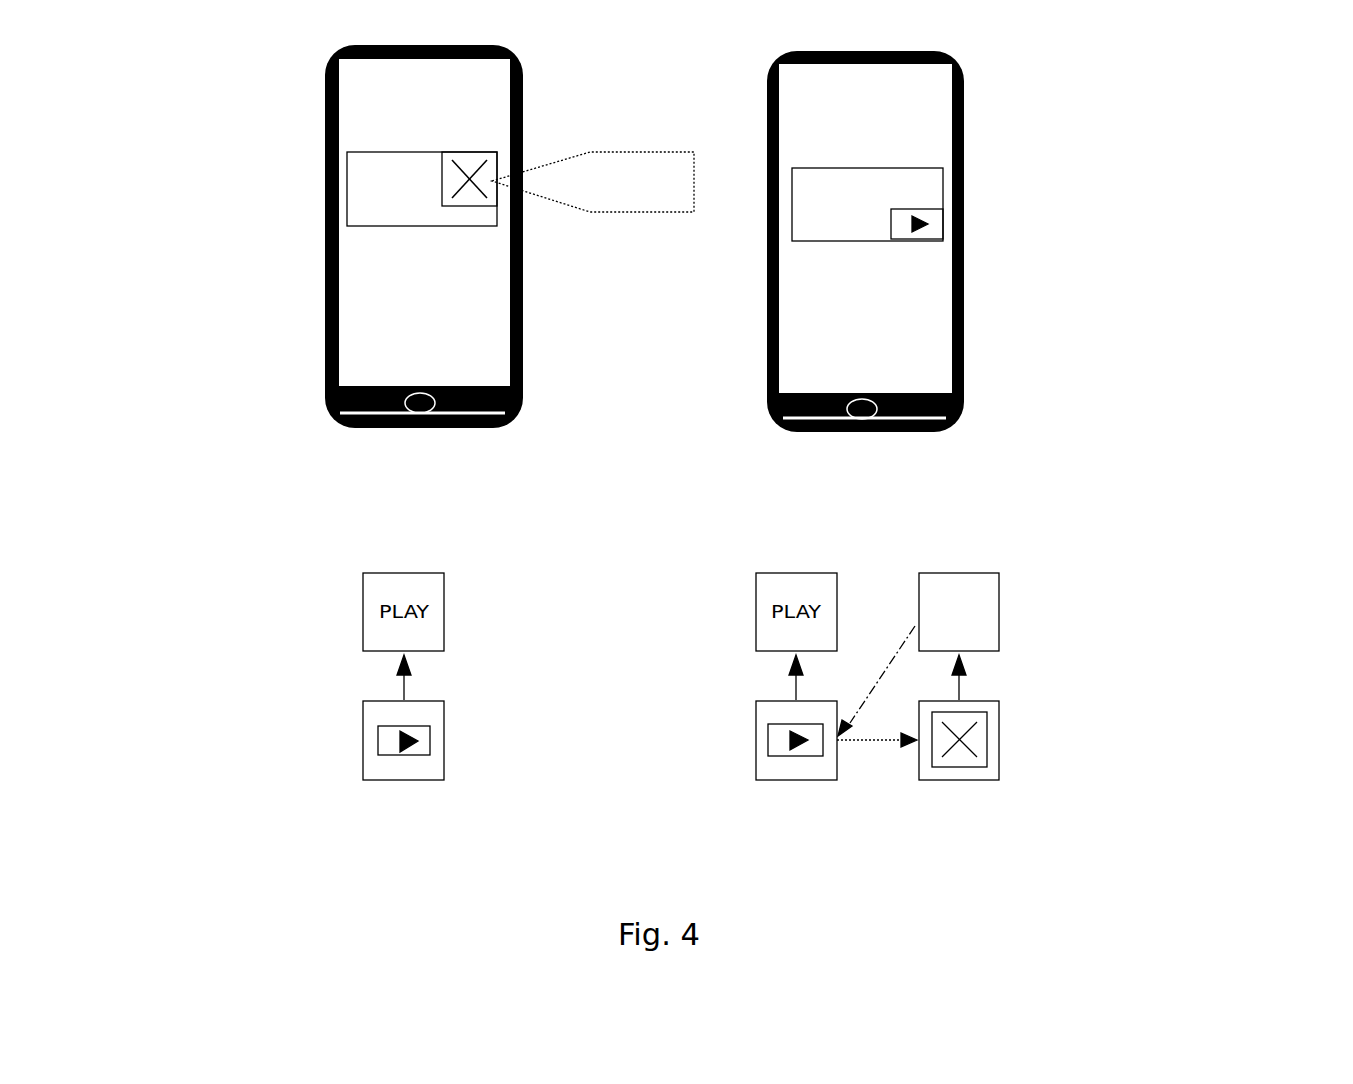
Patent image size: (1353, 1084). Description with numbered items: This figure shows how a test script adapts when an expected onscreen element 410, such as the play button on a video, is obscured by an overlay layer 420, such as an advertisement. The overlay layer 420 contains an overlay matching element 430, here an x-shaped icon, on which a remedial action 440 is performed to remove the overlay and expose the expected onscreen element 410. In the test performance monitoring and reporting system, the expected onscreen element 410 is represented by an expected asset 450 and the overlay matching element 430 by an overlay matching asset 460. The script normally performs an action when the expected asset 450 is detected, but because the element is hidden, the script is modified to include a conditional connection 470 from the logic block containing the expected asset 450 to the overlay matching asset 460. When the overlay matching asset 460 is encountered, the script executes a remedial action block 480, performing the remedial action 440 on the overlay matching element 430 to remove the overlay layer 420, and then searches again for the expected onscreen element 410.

The expected onscreen element 410 is at (912, 237).
The overlay layer 420 is at (402, 228).
The overlay matching element 430 is at (471, 206).
The remedial action 440 is at (648, 184).
The expected asset 450 is at (400, 752).
The overlay matching asset 460 is at (1000, 772).
The conditional connection 470 is at (875, 740).
The remedial action block 480 is at (1000, 615).